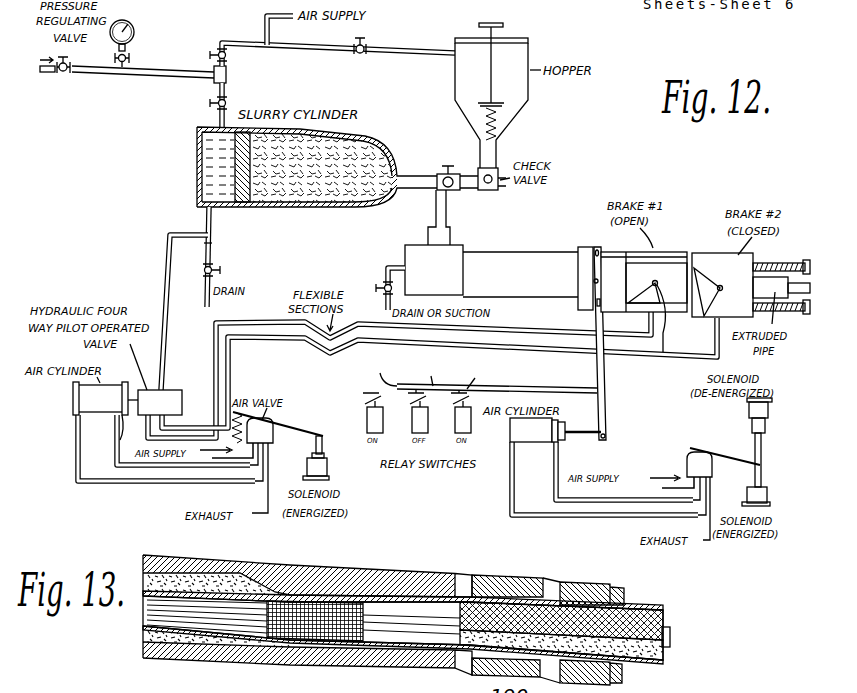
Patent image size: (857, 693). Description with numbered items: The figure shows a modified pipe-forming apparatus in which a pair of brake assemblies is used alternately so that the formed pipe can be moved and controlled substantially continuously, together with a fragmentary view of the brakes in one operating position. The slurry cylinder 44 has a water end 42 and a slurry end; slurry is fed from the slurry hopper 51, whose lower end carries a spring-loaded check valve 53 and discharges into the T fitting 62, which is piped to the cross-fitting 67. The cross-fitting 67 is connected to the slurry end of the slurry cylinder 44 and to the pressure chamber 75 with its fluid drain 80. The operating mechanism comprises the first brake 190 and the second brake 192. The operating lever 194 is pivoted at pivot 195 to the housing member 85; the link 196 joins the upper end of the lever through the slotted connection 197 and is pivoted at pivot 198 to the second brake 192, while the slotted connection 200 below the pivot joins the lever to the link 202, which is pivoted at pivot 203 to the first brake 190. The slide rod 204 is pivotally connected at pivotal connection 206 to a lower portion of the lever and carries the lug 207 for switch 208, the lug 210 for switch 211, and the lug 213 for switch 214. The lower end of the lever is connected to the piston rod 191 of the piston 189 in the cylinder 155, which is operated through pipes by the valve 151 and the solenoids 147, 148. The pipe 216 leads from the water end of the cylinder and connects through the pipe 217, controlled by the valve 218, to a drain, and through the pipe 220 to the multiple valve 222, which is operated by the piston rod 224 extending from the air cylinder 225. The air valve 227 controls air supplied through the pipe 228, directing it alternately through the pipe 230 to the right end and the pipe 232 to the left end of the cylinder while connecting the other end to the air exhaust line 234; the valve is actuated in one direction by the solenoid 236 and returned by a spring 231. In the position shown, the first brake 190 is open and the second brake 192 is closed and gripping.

In FIG. 12, the water end of slurry cylinder 42 is at (197, 163).
In FIG. 12, the slurry cylinder 44 is at (323, 208).
In FIG. 12, the slurry hopper 51 is at (528, 52).
In FIG. 12, the check valve 53 is at (497, 168).
In FIG. 12, the T fitting 62 is at (500, 187).
In FIG. 12, the cross-fitting 67 is at (433, 171).
In FIG. 12, the pressure chamber 75 is at (453, 248).
In FIG. 12, the fluid drain 80 is at (397, 265).
In FIG. 12, the housing member 85 is at (580, 248).
In FIG. 12, the solenoid 147 is at (747, 412).
In FIG. 12, the solenoid 148 is at (764, 495).
In FIG. 12, the valve 151 is at (687, 457).
In FIG. 12, the cylinder 155 is at (512, 440).
In FIG. 12, the piston 189 is at (540, 443).
In FIG. 12, the first brake 190 is at (658, 252).
In FIG. 13, the first brake 190 is at (540, 568).
In FIG. 12, the piston rod 191 is at (577, 438).
In FIG. 12, the second brake 192 is at (753, 258).
In FIG. 13, the second brake 192 is at (625, 586).
In FIG. 12, the operating lever 194 is at (605, 375).
In FIG. 12, the pivot 195 is at (594, 280).
In FIG. 12, the link 196 is at (663, 258).
In FIG. 12, the slotted connection 197 is at (598, 252).
In FIG. 12, the pivot 198 is at (718, 292).
In FIG. 12, the slotted connection 200 is at (595, 303).
In FIG. 12, the link 202 is at (640, 303).
In FIG. 12, the pivot 203 is at (676, 321).
In FIG. 12, the slide rod 204 is at (550, 388).
In FIG. 12, the pivotal connection 206 is at (605, 395).
In FIG. 12, the lug 207 is at (382, 369).
In FIG. 12, the switch 208 is at (367, 418).
In FIG. 12, the lug 210 is at (439, 370).
In FIG. 12, the switch 211 is at (408, 418).
In FIG. 12, the lug 213 is at (486, 373).
In FIG. 12, the switch 214 is at (471, 427).
In FIG. 12, the pipe 216 is at (213, 221).
In FIG. 12, the pipe 217 is at (213, 251).
In FIG. 12, the valve 218 is at (221, 271).
In FIG. 12, the pipe 220 is at (168, 268).
In FIG. 12, the multiple valve 222 is at (171, 390).
In FIG. 12, the piston rod 224 is at (115, 443).
In FIG. 12, the air cylinder 225 is at (88, 400).
In FIG. 12, the air valve 227 is at (267, 423).
In FIG. 12, the pipe 228 is at (217, 459).
In FIG. 12, the pipe 230 is at (115, 435).
In FIG. 12, the spring 231 is at (230, 423).
In FIG. 12, the pipe 232 is at (85, 487).
In FIG. 12, the air exhaust line 234 is at (270, 507).
In FIG. 12, the solenoid 236 is at (328, 468).